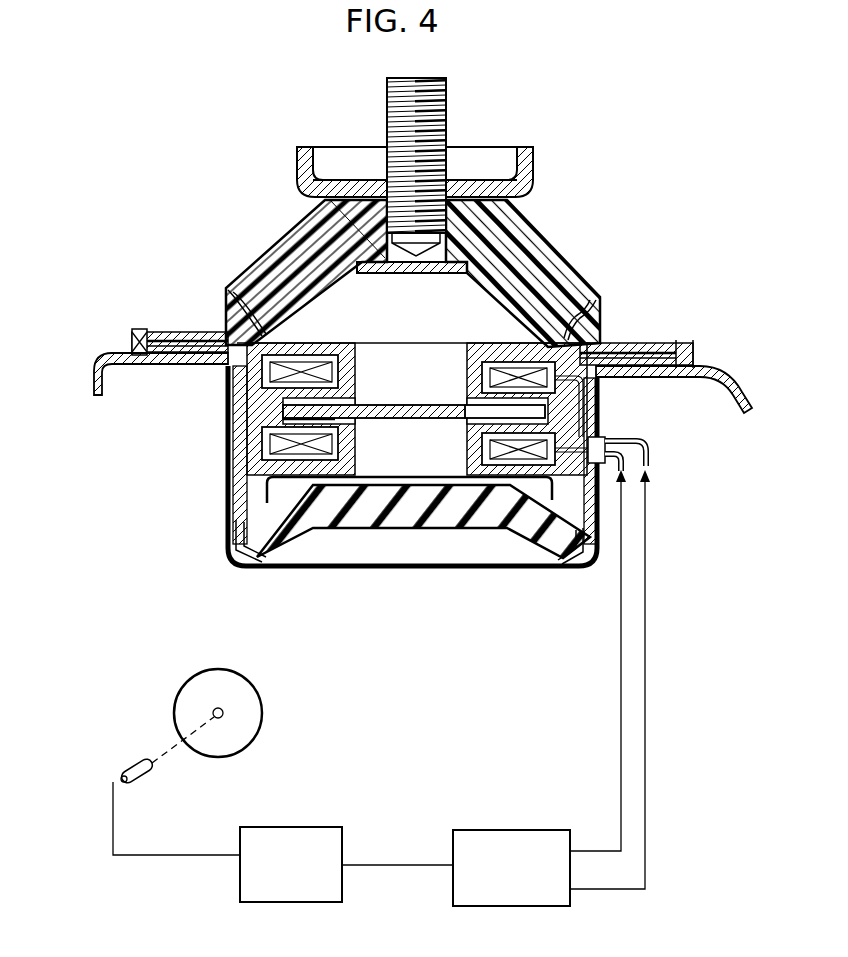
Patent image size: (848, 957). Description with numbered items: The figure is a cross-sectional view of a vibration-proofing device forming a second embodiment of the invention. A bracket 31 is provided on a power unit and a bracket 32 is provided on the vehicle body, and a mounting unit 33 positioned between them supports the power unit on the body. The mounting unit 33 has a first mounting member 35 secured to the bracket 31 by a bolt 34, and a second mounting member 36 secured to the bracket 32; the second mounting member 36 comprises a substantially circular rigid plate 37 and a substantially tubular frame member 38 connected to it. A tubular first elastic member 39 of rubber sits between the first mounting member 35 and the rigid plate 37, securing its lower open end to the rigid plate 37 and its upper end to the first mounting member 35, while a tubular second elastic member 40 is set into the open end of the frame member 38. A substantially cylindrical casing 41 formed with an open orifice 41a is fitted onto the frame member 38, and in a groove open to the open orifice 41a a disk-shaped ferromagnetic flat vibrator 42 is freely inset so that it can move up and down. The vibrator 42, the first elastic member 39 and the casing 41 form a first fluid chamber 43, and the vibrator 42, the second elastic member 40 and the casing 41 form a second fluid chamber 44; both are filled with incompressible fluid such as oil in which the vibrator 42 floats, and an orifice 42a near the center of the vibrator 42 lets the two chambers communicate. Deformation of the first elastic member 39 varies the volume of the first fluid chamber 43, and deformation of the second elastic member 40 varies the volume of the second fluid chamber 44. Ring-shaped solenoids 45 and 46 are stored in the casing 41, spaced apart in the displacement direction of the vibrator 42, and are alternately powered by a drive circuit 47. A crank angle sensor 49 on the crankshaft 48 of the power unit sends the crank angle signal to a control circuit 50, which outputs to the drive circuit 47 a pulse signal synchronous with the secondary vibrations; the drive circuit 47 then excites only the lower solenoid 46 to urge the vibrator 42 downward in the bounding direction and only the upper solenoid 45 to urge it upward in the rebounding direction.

The bracket 31 is at (524, 172).
The bracket 32 is at (92, 377).
The mounting unit 33 is at (584, 276).
The bolt 34 is at (446, 85).
The first mounting member 35 is at (474, 198).
The second mounting member 36 is at (122, 342).
The rigid plate 37 is at (196, 338).
The frame member 38 is at (228, 372).
The first elastic member 39 is at (540, 234).
The second elastic member 40 is at (334, 520).
The casing 41 is at (233, 422).
The open orifice 41a is at (448, 404).
The vibrator 42 is at (384, 405).
The orifice 42a is at (436, 418).
The first fluid chamber 43 is at (348, 282).
The second fluid chamber 44 is at (387, 486).
The solenoid 45 is at (500, 362).
The solenoid 46 is at (484, 445).
The drive circuit 47 is at (495, 882).
The crankshaft 48 is at (178, 697).
The crank angle sensor 49 is at (128, 760).
The control circuit 50 is at (275, 877).